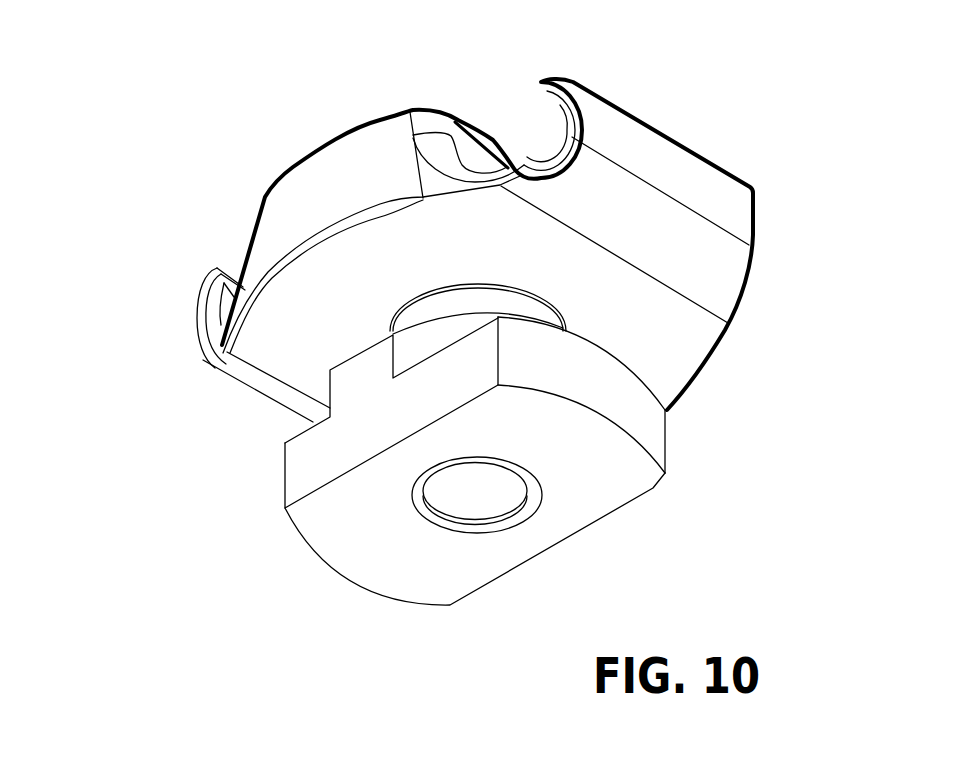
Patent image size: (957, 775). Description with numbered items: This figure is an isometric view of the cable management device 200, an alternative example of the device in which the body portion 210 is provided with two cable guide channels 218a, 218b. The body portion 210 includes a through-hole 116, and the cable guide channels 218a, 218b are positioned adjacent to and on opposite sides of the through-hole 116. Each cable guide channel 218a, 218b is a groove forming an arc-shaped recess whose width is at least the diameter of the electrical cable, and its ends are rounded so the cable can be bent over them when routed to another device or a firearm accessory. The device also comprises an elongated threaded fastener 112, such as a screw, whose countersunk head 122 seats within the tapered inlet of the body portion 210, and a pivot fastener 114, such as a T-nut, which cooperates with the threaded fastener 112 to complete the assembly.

The cable management device 200 is at (463, 307).
The body portion 210 is at (337, 160).
The cable guide channel 218a is at (462, 148).
The cable guide channel 218b is at (214, 270).
The countersunk head 122 is at (511, 147).
The through-hole 116 is at (470, 282).
The pivot fastener 114 is at (310, 458).
The elongated threaded fastener 112 is at (472, 495).